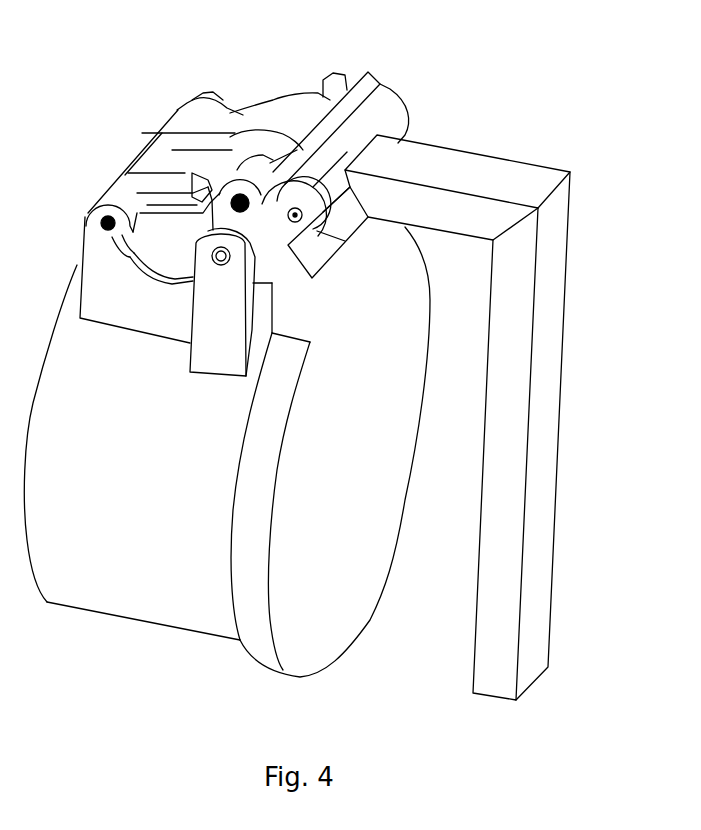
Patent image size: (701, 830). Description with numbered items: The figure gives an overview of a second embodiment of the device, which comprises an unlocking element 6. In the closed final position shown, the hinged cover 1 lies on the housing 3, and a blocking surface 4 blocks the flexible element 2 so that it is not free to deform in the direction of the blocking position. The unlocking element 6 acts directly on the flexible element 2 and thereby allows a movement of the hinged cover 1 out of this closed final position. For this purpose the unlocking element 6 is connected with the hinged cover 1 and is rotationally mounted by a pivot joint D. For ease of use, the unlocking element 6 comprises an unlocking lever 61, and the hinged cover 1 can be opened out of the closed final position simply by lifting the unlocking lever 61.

The hinged cover 1 is at (298, 628).
The flexible element 2 is at (200, 167).
The housing 3 is at (137, 572).
The blocking surface 4 is at (172, 187).
The unlocking element 6 is at (280, 110).
The unlocking lever 61 is at (548, 348).
The pivot joint D is at (295, 215).